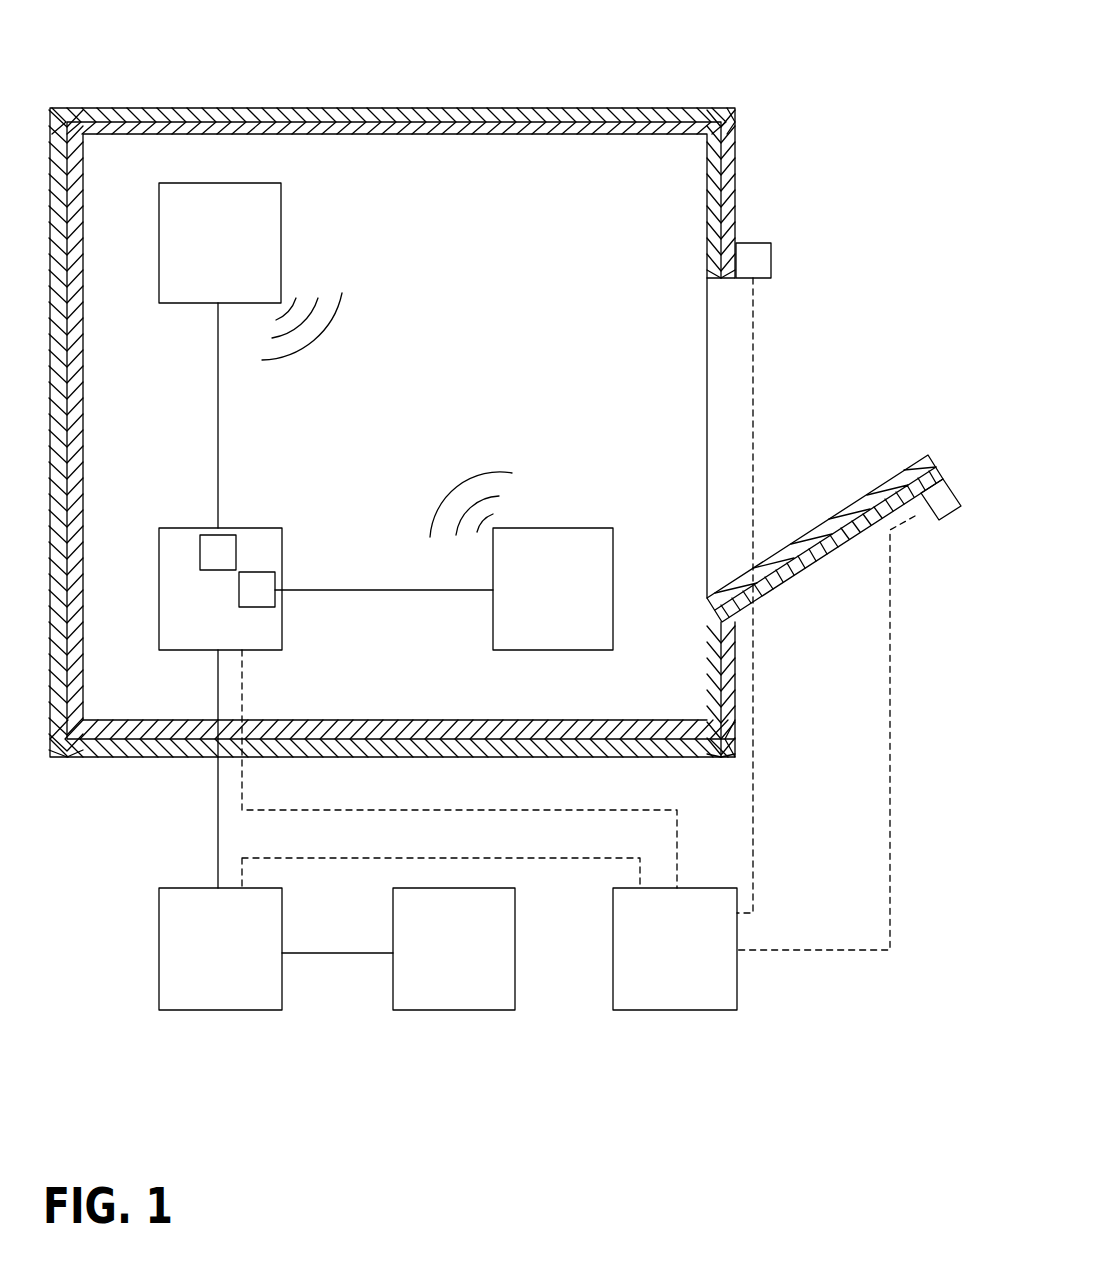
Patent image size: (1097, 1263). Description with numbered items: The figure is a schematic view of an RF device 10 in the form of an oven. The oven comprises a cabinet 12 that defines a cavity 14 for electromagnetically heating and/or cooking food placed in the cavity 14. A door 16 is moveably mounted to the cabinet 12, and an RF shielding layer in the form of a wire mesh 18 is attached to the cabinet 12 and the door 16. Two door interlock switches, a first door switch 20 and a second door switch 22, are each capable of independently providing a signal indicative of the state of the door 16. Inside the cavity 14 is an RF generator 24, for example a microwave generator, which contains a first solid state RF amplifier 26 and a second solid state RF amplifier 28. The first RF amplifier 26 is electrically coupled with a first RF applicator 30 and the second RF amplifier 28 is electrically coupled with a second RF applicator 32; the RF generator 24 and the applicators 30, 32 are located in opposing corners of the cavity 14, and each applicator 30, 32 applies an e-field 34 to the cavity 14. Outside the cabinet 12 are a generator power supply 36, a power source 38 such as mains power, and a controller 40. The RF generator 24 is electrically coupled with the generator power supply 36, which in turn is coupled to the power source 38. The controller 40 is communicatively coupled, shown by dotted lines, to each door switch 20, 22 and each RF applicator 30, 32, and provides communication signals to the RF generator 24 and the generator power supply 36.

The RF device 10 is at (352, 22).
The cabinet 12 is at (526, 110).
The cavity 14 is at (439, 351).
The door 16 is at (835, 553).
The wire mesh 18 is at (578, 128).
The first door switch 20 is at (745, 273).
The second door switch 22 is at (849, 714).
The RF generator 24 is at (189, 629).
The first solid state RF amplifier 26 is at (210, 565).
The second solid state RF amplifier 28 is at (249, 602).
The first RF applicator 30 is at (212, 250).
The second RF applicator 32 is at (549, 604).
The e-field 34 is at (342, 313).
The generator power supply 36 is at (212, 962).
The power source 38 is at (447, 962).
The controller 40 is at (669, 962).